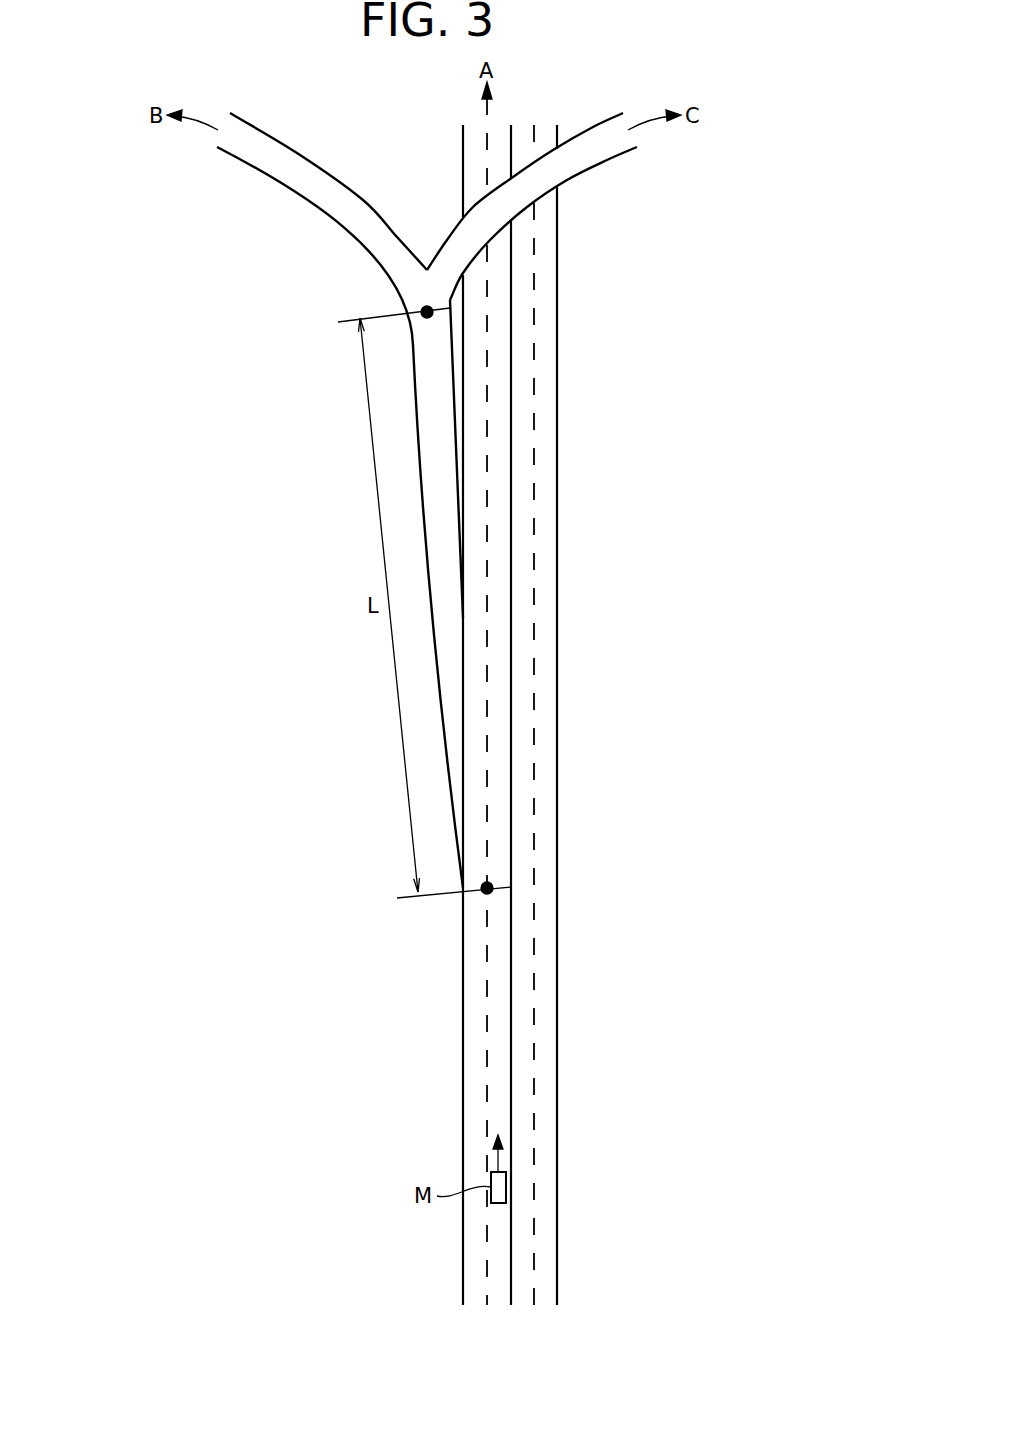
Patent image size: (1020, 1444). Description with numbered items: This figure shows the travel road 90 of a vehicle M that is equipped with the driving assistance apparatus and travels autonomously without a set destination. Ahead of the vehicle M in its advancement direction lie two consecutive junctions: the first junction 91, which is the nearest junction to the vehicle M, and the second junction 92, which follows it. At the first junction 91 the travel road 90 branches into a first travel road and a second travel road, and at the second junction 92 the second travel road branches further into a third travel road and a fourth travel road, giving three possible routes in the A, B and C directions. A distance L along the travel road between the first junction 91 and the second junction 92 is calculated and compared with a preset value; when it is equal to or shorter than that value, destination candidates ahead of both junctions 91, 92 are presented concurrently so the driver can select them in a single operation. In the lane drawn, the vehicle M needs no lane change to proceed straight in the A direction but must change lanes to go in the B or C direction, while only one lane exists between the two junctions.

The travel road 90 is at (463, 1005).
The first junction 91 is at (487, 888).
The second junction 92 is at (427, 312).